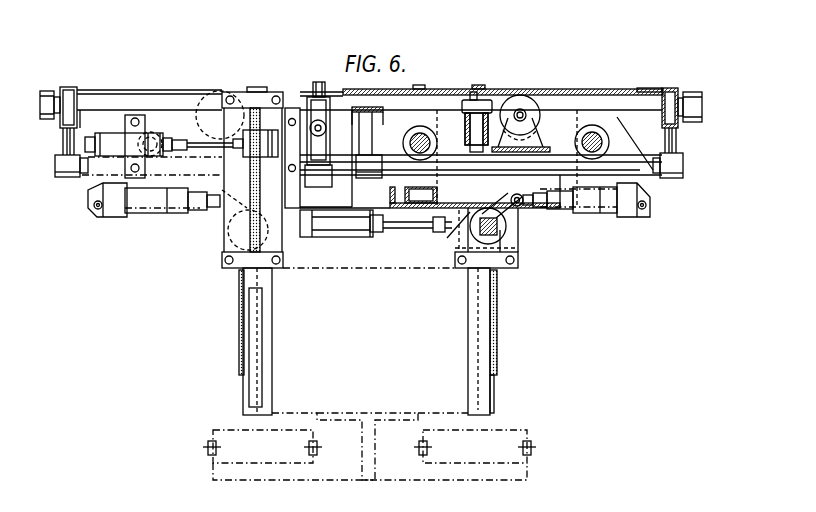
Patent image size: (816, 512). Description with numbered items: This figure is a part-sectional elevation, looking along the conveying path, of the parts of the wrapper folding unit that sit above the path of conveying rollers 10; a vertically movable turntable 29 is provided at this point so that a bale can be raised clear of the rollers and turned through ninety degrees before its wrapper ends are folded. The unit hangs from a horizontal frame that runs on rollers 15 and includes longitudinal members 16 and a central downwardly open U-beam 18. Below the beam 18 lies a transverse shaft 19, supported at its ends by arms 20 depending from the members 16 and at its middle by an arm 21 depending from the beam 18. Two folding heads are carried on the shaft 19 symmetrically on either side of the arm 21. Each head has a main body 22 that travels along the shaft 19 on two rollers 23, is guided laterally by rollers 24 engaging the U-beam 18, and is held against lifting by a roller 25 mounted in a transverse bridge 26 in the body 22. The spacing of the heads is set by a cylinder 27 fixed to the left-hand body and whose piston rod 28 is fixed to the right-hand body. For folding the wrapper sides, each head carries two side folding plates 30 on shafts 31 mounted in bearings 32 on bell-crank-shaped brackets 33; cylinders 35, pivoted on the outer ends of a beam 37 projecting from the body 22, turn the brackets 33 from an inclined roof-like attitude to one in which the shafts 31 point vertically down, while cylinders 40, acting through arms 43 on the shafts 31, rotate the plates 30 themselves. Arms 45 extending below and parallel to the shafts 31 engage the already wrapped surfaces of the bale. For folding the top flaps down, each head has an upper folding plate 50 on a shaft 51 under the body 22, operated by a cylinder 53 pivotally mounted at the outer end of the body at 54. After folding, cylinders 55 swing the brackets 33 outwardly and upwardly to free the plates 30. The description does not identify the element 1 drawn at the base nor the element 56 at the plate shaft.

The machine frame 1 is at (307, 415).
The rollers 10 is at (262, 430).
The rollers 15 is at (55, 84).
The longitudinal members 16 is at (74, 93).
The central beam 18 is at (545, 92).
The shaft 19 is at (484, 172).
The arms 20 is at (64, 142).
The arm 21 is at (370, 131).
The main body 22 is at (150, 188).
The rollers 23 is at (164, 124).
The rollers 24 is at (468, 93).
The roller 25 is at (218, 95).
The bridge 26 is at (537, 147).
The pneumatic or hydraulic cylinder 27 is at (337, 234).
The piston rod 28 is at (408, 230).
The turntable 29 is at (398, 415).
The side folding plates 30 is at (253, 384).
The shaft 31 is at (255, 188).
The bearings 32 is at (258, 92).
The supporting member (bracket) 33 is at (222, 224).
The pneumatic or hydraulic cylinders 35 is at (330, 123).
The beam 37 is at (328, 190).
The pneumatic or hydraulic cylinders 40 is at (128, 142).
The arms 43 is at (200, 150).
The arms 45 is at (268, 375).
The upper folding plate 50 is at (242, 325).
The shaft 51 is at (232, 238).
The pneumatic or hydraulic cylinder 53 is at (141, 213).
The pivotal mounting 54 is at (96, 206).
The cylinders 55 is at (549, 197).
The lever 56 is at (253, 200).